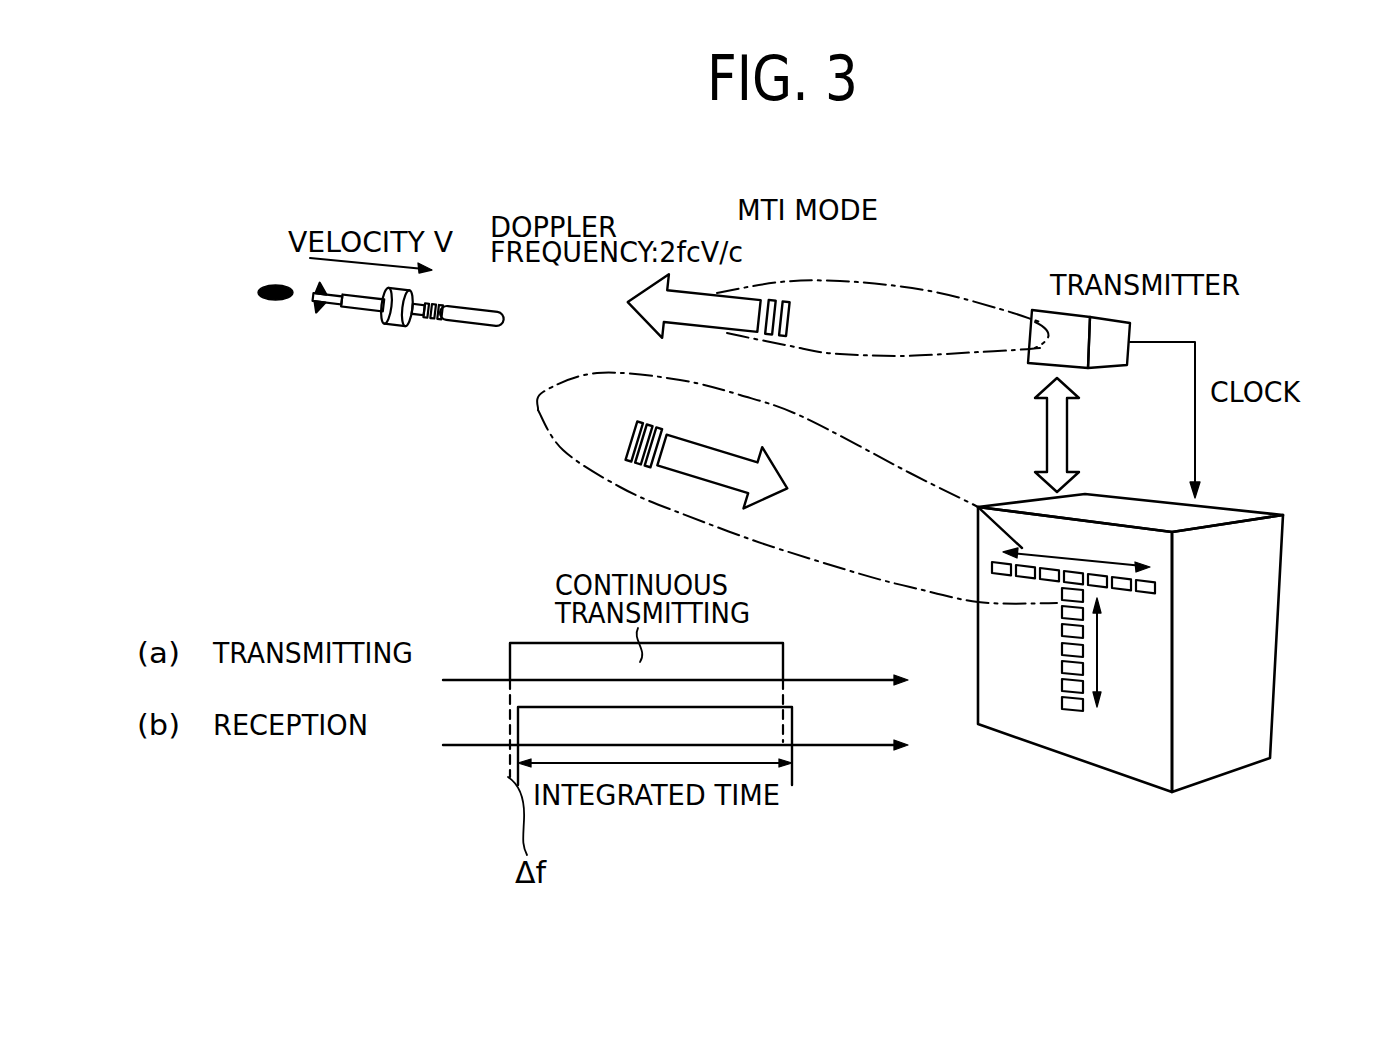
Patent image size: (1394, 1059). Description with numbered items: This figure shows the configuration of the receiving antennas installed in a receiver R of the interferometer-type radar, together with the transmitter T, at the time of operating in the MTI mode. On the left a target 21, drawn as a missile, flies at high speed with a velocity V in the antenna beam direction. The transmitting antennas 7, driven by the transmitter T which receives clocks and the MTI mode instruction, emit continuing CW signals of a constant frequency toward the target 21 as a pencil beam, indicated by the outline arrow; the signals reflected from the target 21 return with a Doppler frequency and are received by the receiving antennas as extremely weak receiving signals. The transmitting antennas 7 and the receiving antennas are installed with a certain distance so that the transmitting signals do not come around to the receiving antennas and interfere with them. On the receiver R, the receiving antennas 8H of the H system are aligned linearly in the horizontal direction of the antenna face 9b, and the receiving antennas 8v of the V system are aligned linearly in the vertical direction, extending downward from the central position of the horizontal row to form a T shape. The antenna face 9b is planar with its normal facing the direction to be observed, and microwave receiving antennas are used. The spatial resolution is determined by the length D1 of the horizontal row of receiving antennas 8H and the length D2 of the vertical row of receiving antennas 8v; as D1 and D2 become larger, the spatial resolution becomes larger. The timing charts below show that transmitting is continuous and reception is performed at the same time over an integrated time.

The target 21 is at (360, 310).
The transmitting antennas 7 is at (1037, 308).
The transmitter T is at (1137, 328).
The antenna face 9b is at (1157, 562).
The receiver R is at (1262, 602).
The receiving antennas of the H system 8H is at (1003, 573).
The receiving antennas of the V system 8v is at (1060, 683).
The length of the row of the H-system receiving antennas D1 is at (1062, 593).
The length of the row of the V-system receiving antennas D2 is at (1097, 653).